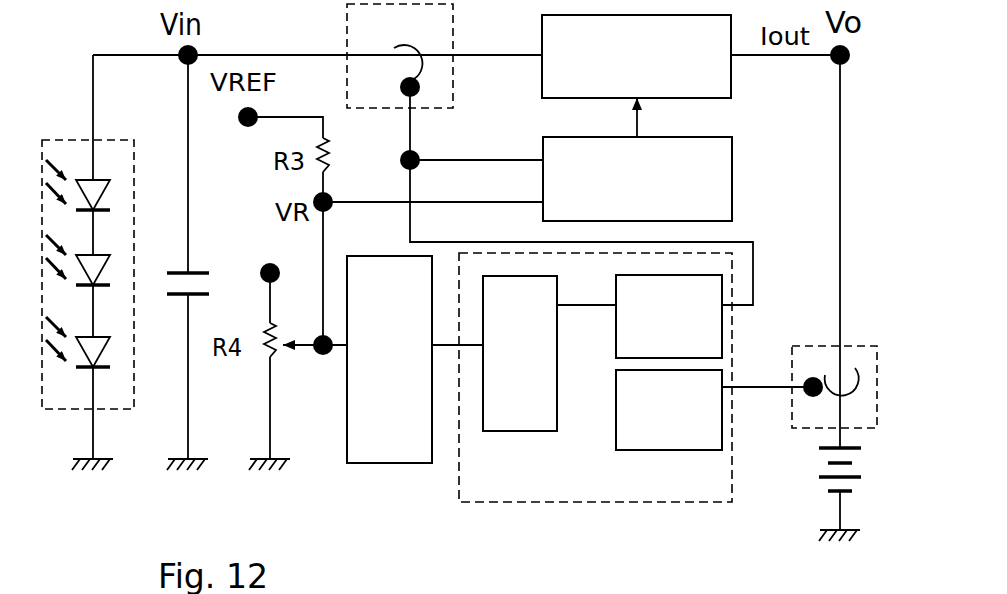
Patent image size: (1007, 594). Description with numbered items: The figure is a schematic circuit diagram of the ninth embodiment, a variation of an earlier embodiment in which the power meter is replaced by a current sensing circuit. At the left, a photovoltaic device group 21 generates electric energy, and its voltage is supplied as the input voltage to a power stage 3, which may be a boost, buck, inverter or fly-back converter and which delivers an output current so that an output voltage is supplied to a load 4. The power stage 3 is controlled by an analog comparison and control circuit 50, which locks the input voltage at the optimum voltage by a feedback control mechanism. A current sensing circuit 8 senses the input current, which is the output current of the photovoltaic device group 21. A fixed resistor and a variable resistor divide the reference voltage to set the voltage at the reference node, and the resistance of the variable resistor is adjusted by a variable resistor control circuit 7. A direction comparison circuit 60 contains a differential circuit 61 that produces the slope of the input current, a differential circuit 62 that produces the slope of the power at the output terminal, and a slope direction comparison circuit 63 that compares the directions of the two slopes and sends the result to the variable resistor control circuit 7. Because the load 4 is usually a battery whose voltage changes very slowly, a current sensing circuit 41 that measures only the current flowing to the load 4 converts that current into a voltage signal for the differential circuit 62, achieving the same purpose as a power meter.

The photovoltaic device group 21 is at (83, 140).
The current sensing circuit 8 is at (453, 100).
The power stage 3 is at (731, 75).
The analog comparison and control circuit 50 is at (732, 160).
The variable resistor control circuit 7 is at (388, 463).
The direction comparison circuit 60 is at (527, 502).
The differential circuit 61 is at (616, 315).
The differential circuit 62 is at (616, 420).
The slope direction comparison circuit 63 is at (532, 431).
The current sensing circuit 41 is at (817, 346).
The load 4 is at (810, 471).